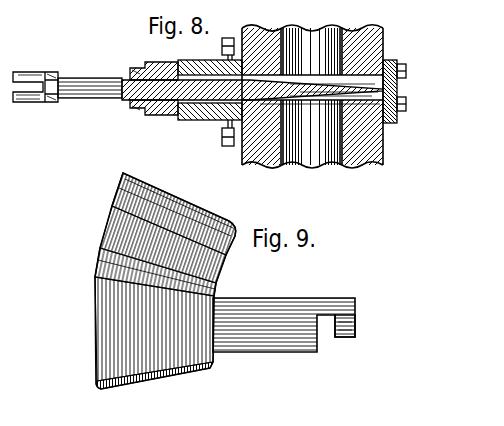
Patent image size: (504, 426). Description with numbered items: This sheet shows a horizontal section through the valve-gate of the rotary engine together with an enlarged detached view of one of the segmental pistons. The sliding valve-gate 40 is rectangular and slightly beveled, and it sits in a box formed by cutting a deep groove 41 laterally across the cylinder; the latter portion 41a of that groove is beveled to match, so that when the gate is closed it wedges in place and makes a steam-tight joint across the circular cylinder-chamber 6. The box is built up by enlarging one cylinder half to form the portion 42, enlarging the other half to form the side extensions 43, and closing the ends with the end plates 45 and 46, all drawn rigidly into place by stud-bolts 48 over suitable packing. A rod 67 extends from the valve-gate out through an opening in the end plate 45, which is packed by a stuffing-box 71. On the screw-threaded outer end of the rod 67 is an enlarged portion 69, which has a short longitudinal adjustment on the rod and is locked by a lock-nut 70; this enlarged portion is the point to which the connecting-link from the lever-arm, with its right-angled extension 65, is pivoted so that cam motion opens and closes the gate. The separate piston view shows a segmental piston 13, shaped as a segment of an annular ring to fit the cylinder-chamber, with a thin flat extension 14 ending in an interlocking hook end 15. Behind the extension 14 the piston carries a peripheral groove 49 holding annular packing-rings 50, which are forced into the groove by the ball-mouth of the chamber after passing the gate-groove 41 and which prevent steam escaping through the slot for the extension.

In FIG. 8, the circular cylinder-chamber 6 is at (317, 50).
In FIG. 9, the segmental piston 13 is at (139, 279).
In FIG. 9, the flat extension 14 is at (292, 330).
In FIG. 9, the hook end 15 is at (352, 315).
In FIG. 8, the valve-gate 40 is at (210, 117).
In FIG. 8, the groove 41 is at (378, 92).
In FIG. 8, the beveled portion of the groove 41a is at (393, 120).
In FIG. 8, the enlarged cylinder portion 42 is at (362, 55).
In FIG. 8, the side extension 43 is at (230, 150).
In FIG. 8, the end plate 45 is at (168, 108).
In FIG. 8, the end plate 46 is at (397, 88).
In FIG. 8, the stud-bolts 48 is at (228, 44).
In FIG. 9, the peripheral groove 49 is at (139, 269).
In FIG. 9, the annular packing-ring 50 is at (118, 184).
In FIG. 8, the right-angled extension 65 is at (250, 9).
In FIG. 8, the rod 67 is at (75, 100).
In FIG. 8, the enlarged portion 69 is at (28, 97).
In FIG. 8, the lock-nut 70 is at (50, 76).
In FIG. 8, the stuffing-box 71 is at (142, 67).